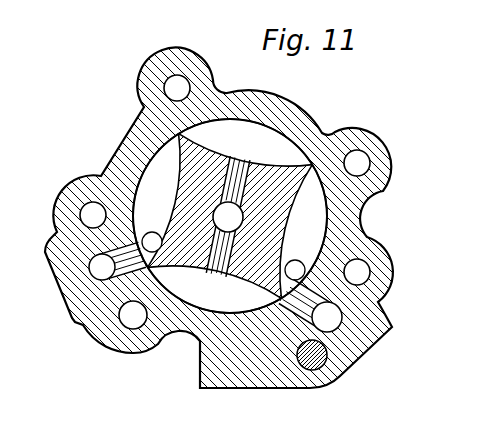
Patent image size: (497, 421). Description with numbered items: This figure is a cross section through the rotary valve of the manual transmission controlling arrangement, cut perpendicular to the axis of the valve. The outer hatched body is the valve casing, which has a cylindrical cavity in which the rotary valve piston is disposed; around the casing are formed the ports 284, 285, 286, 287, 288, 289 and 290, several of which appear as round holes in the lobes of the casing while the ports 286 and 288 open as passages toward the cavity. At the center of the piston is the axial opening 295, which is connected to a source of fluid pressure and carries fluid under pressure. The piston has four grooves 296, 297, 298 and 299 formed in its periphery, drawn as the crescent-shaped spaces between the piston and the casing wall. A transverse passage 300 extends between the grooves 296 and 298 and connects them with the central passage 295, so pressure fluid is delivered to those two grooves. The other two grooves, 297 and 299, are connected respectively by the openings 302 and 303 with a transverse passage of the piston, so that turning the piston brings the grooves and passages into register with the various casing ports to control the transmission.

The port 284 is at (370, 163).
The port 285 is at (370, 272).
The port 286 is at (317, 295).
The port 287 is at (133, 329).
The port 288 is at (123, 268).
The port 289 is at (80, 214).
The port 290 is at (164, 89).
The axial opening 295 is at (228, 217).
The groove 296 is at (258, 144).
The groove 297 is at (170, 194).
The groove 298 is at (215, 289).
The groove 299 is at (322, 220).
The transverse passage 300 is at (248, 160).
The opening 302 is at (152, 232).
The opening 303 is at (296, 260).